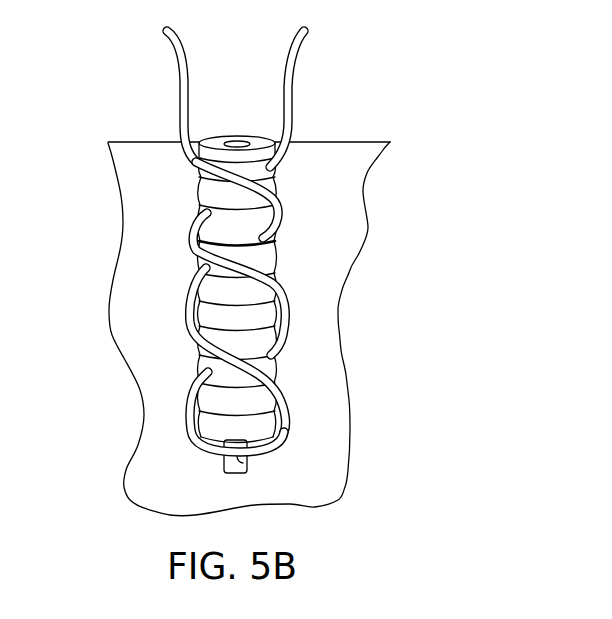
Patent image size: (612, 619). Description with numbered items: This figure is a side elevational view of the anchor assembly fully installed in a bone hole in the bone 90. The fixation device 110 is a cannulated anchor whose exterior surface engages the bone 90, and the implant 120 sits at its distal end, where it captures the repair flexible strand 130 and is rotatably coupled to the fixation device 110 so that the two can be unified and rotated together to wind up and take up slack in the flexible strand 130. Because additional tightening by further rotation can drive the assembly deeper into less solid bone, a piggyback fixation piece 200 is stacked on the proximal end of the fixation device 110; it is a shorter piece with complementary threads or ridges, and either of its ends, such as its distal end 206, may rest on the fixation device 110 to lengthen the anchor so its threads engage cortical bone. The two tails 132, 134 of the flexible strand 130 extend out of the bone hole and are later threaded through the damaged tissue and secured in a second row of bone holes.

The bone 90 is at (163, 279).
The fixation device 110 is at (290, 327).
The implant 120 is at (221, 462).
The flexible strand 130 is at (288, 434).
The tail 132 is at (180, 91).
The tail 134 is at (293, 86).
The piggyback fixation piece 200 is at (283, 178).
The distal end 206 is at (267, 240).